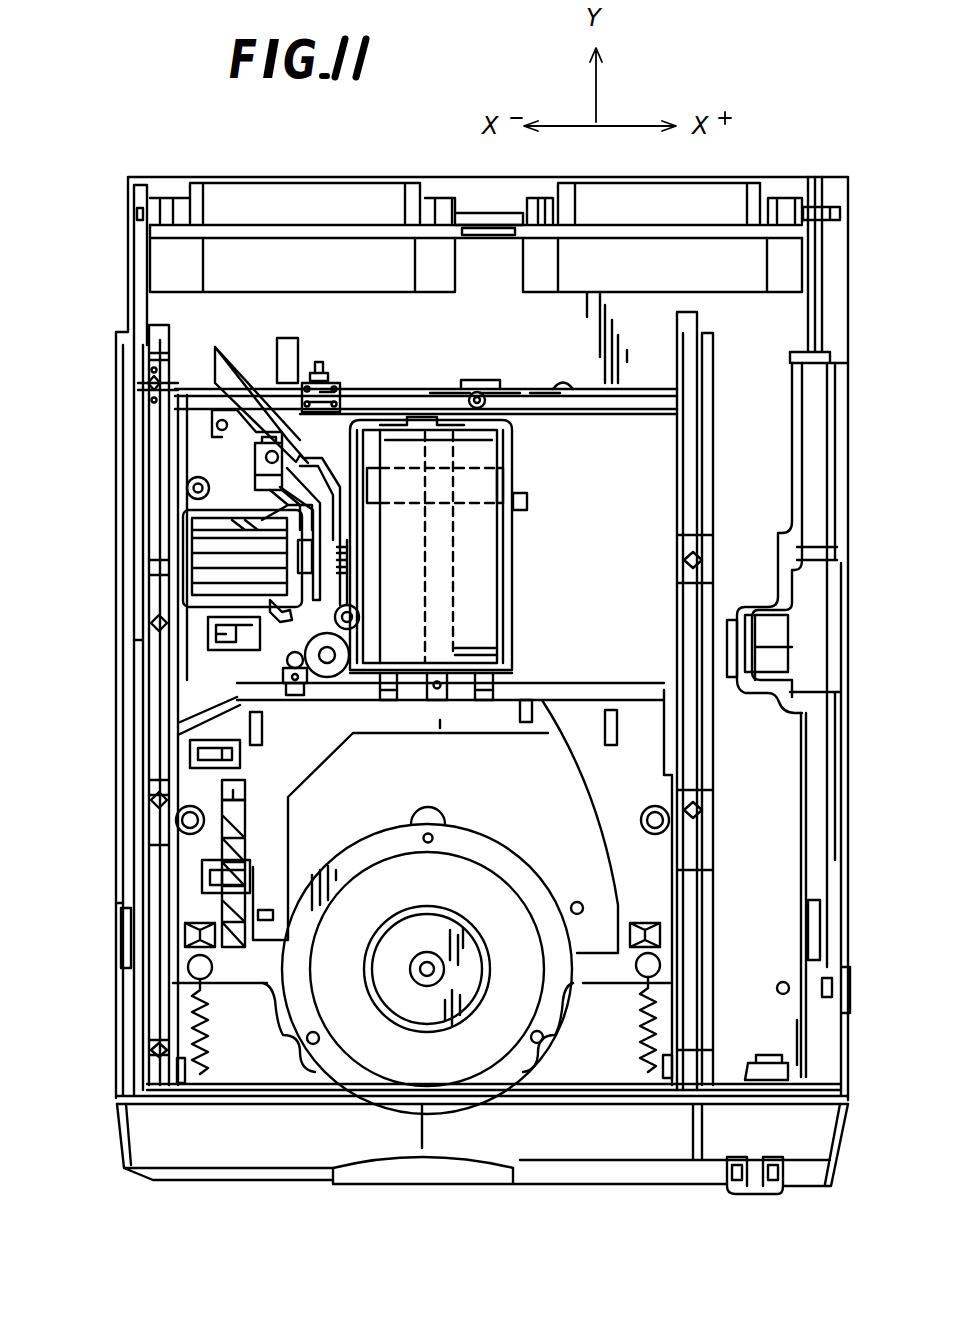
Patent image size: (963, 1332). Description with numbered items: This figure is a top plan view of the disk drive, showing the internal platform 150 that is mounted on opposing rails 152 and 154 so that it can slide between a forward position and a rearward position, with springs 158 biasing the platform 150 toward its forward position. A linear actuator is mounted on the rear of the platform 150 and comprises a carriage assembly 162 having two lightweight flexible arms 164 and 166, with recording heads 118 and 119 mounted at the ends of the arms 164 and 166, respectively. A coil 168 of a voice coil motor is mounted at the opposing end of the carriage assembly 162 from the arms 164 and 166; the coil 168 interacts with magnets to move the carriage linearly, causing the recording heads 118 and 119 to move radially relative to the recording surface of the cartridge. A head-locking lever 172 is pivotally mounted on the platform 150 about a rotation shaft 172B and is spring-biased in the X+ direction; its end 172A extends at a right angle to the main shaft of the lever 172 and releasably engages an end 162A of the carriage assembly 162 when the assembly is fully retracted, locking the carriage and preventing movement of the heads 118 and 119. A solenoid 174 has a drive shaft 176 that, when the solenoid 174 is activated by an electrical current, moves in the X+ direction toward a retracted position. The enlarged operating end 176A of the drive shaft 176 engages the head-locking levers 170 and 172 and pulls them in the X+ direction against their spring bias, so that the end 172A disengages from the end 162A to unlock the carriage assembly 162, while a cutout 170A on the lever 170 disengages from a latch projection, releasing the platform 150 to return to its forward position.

The recording head 118 is at (450, 723).
The recording head 119 is at (460, 880).
The internal platform 150 is at (597, 855).
The rail 152 is at (162, 590).
The rail 154 is at (700, 517).
The spring 158 is at (205, 1050).
The carriage assembly 162 is at (455, 523).
The end of carriage assembly 162A is at (440, 453).
The flexible arm 164 is at (525, 608).
The flexible arm 166 is at (455, 655).
The coil 168 is at (488, 488).
The head-locking lever 170 is at (290, 472).
The cutout 170A is at (275, 378).
The head-locking lever 172 is at (347, 440).
The end of lever 172A is at (422, 420).
The rotation shaft 172B is at (355, 620).
The solenoid 174 is at (200, 523).
The drive shaft 176 is at (310, 565).
The enlarged operating end 176A is at (342, 553).